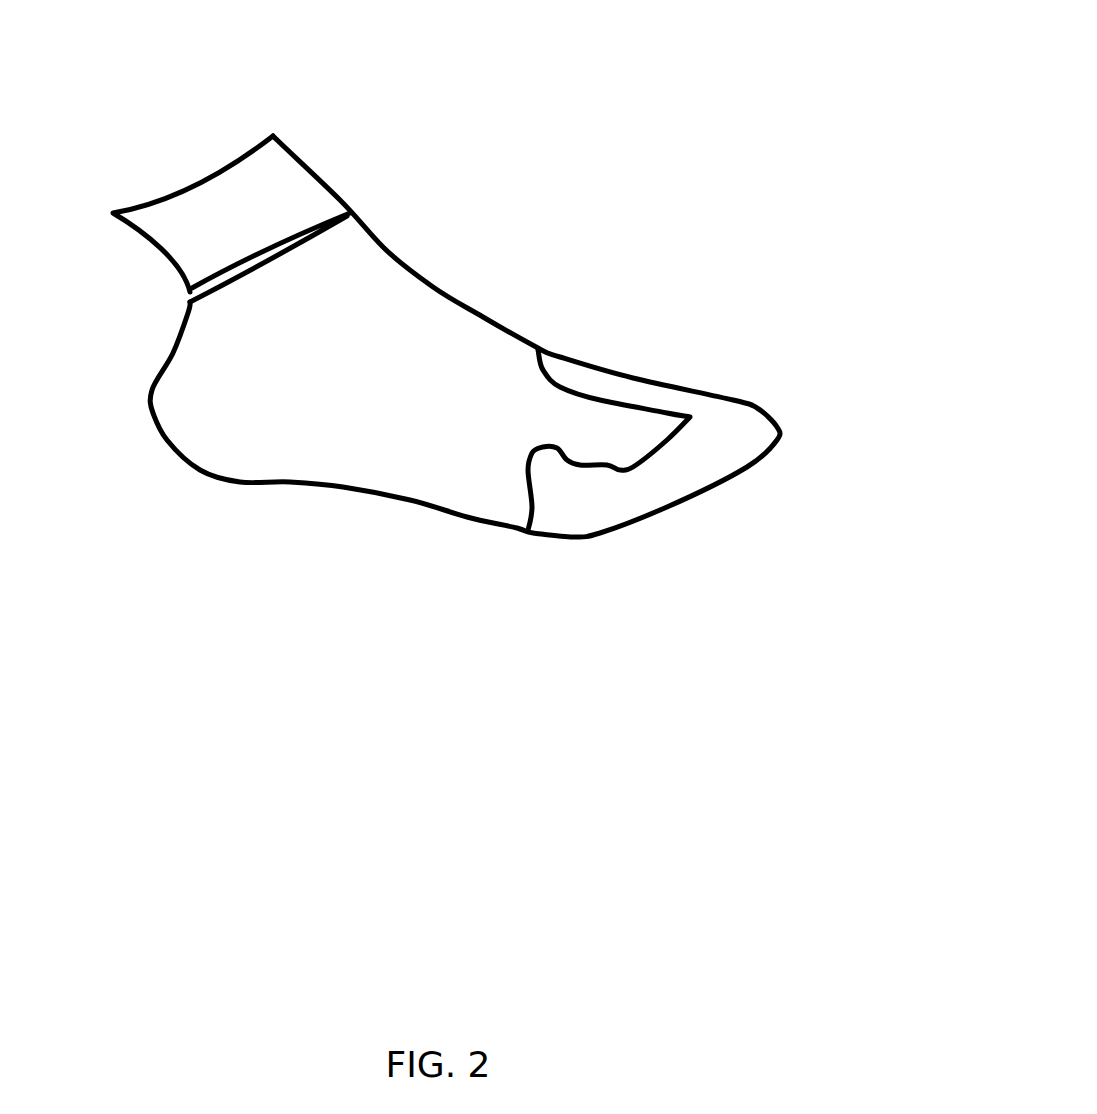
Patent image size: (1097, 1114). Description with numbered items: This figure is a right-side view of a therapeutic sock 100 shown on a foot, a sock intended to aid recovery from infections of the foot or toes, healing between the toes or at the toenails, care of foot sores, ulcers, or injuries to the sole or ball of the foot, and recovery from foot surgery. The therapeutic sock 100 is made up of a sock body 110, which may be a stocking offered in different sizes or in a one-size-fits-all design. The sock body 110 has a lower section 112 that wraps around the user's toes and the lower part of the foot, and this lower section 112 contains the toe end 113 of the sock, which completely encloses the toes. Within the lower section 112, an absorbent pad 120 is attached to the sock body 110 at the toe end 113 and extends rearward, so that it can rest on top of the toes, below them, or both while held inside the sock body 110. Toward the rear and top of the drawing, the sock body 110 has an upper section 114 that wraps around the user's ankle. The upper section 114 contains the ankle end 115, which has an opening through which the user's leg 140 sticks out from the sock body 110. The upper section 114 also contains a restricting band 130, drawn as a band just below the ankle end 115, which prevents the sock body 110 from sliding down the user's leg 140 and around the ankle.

The therapeutic sock 100 is at (921, 88).
The sock body 110 is at (430, 335).
The lower section 112 is at (452, 550).
The toe end 113 is at (800, 457).
The upper section 114 is at (153, 429).
The ankle end 115 is at (242, 228).
The absorbent pad 120 is at (740, 425).
The restricting band 130 is at (323, 220).
The user's leg 140 is at (287, 180).